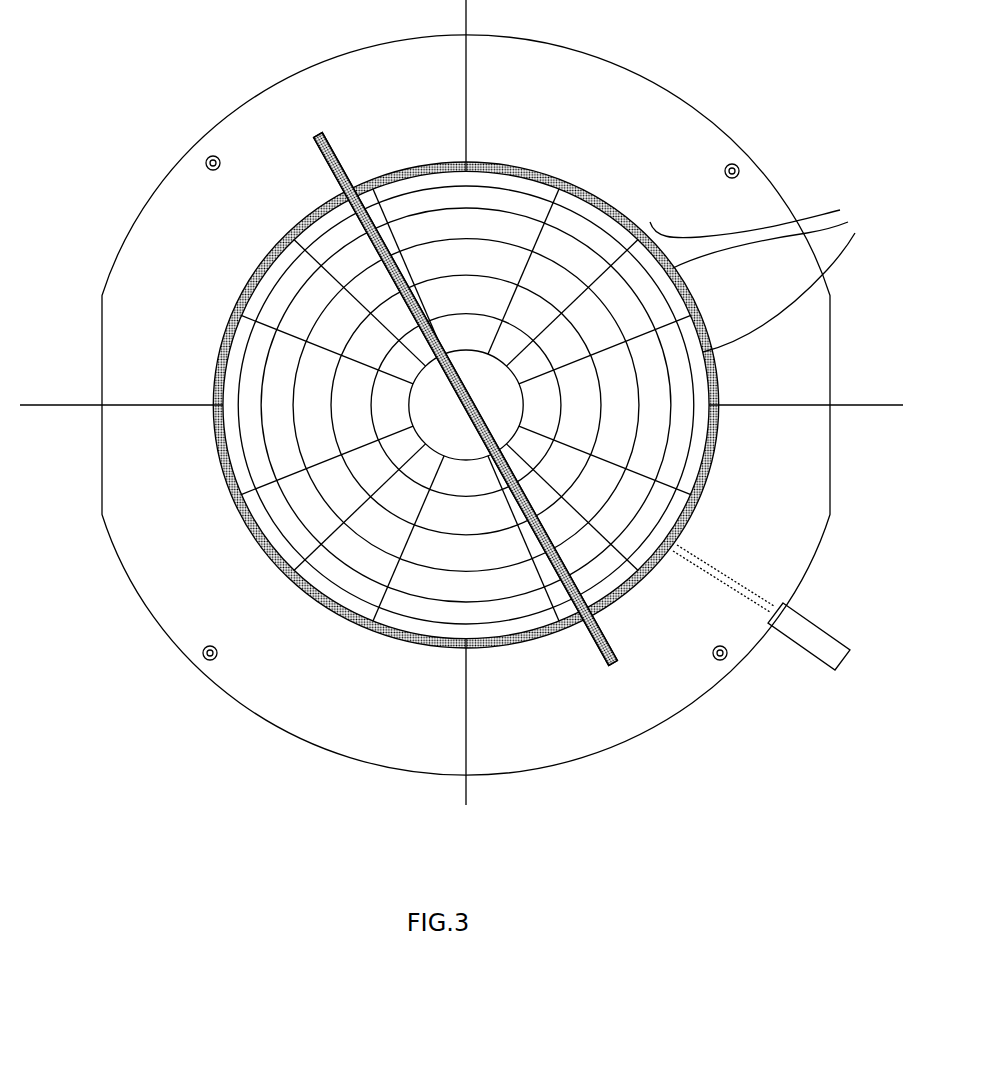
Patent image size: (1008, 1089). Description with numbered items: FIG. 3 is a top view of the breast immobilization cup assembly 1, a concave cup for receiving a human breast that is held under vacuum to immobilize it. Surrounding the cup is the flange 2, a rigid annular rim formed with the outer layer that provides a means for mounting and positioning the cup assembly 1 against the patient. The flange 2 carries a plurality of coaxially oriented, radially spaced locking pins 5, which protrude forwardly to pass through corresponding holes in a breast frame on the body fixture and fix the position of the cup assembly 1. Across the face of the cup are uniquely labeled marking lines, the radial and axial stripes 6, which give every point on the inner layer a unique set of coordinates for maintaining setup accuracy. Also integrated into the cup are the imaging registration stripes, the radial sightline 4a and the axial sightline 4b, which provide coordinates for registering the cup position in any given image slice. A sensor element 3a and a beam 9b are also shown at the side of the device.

The breast immobilization cup assembly 1 is at (445, 220).
The flange 2 is at (176, 266).
The sensor 3a is at (813, 648).
The radial sightline 4a is at (317, 163).
The axial sightline 4b is at (262, 265).
The locking pins 5 is at (713, 660).
The connection lines 6 is at (764, 274).
The beam 9b is at (733, 583).